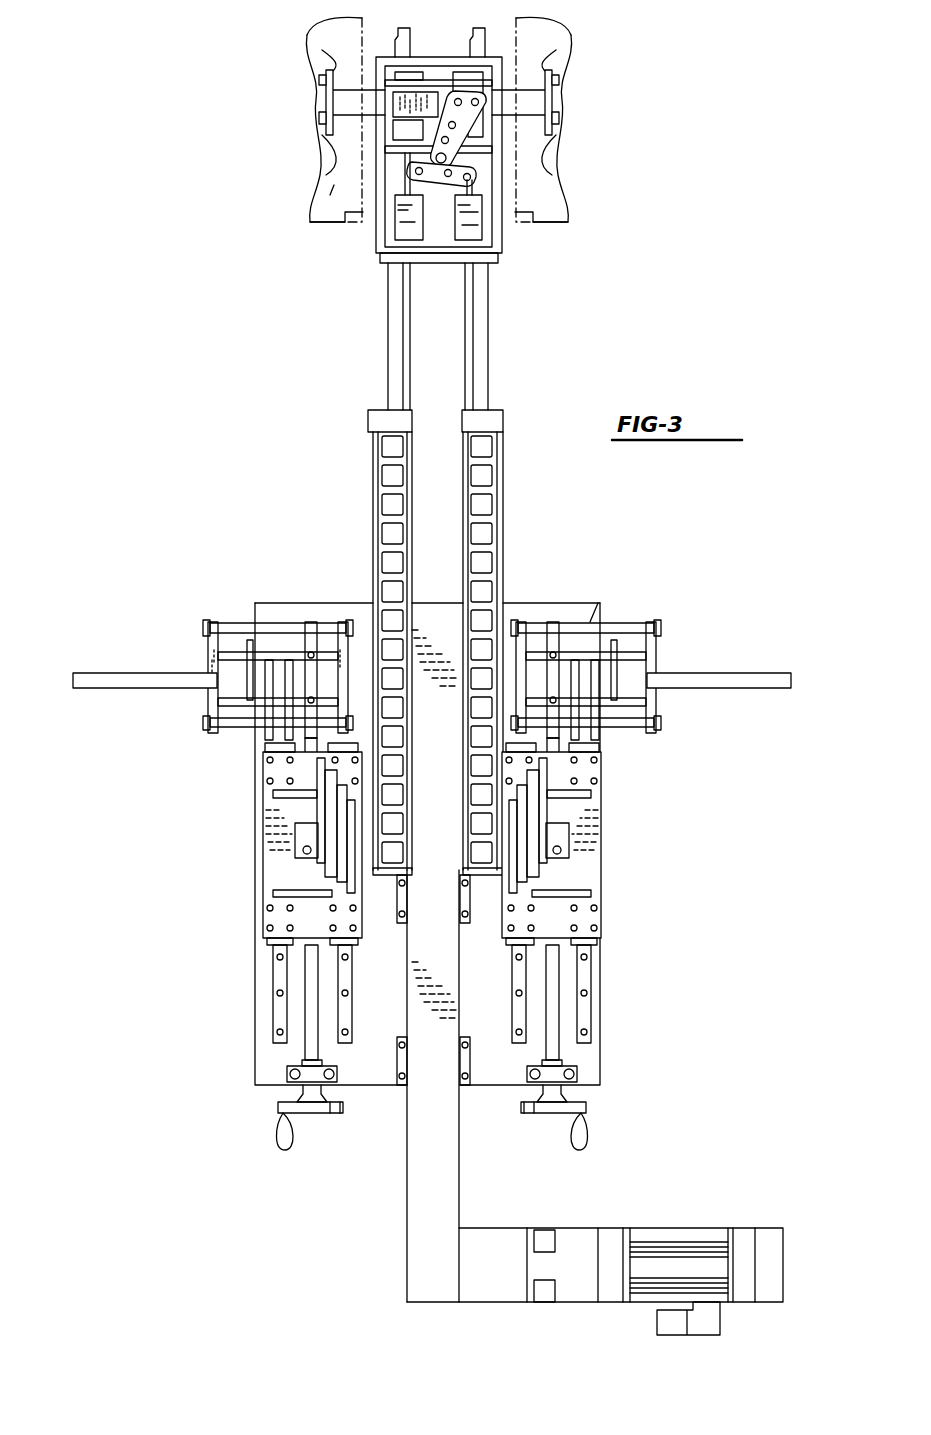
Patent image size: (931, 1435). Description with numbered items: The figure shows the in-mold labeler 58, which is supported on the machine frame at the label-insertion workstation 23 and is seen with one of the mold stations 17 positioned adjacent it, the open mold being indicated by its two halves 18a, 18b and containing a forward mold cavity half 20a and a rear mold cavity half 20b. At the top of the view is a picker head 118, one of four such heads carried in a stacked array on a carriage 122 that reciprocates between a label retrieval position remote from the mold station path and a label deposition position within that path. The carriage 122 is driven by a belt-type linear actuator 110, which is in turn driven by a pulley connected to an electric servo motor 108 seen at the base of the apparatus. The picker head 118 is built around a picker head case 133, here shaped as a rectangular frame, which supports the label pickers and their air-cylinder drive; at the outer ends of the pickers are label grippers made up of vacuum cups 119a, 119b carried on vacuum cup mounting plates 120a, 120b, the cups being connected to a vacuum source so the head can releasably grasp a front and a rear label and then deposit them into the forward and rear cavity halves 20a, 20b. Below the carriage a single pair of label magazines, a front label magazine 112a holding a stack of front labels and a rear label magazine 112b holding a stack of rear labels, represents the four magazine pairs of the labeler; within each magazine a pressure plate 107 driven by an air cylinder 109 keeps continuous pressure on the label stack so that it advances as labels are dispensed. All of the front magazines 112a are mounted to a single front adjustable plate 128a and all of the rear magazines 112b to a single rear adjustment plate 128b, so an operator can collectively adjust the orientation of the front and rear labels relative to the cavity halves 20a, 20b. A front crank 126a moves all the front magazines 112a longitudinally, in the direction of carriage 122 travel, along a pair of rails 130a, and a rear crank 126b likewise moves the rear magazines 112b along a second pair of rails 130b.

The mold station 17 is at (295, 67).
The open mold half 18a is at (318, 207).
The open mold half 18b is at (570, 197).
The forward mold cavity half 20a is at (305, 25).
The rear mold cavity half 20b is at (572, 48).
The label-insertion workstation 23 is at (512, 556).
The in-mold labeler 58 is at (512, 603).
The pressure plate 107 is at (265, 640).
The electric servo motor 108 is at (680, 1240).
The air cylinder 109 is at (152, 688).
The belt-type linear actuator 110 is at (665, 360).
The front label magazine 112a is at (195, 612).
The rear label magazine 112b is at (672, 650).
The picker head 118 is at (372, 180).
The vacuum cup 119a is at (322, 120).
The vacuum cup 119b is at (556, 120).
The vacuum cup mounting plate 120a is at (320, 158).
The vacuum cup mounting plate 120b is at (560, 150).
The carriage 122 is at (487, 296).
The front crank 126a is at (311, 1108).
The rear crank 126b is at (584, 1118).
The front adjustable plate 128a is at (272, 861).
The rear adjustment plate 128b is at (583, 876).
The rails 130a is at (345, 1012).
The rails 130b is at (585, 1012).
The picker head case 133 is at (380, 245).